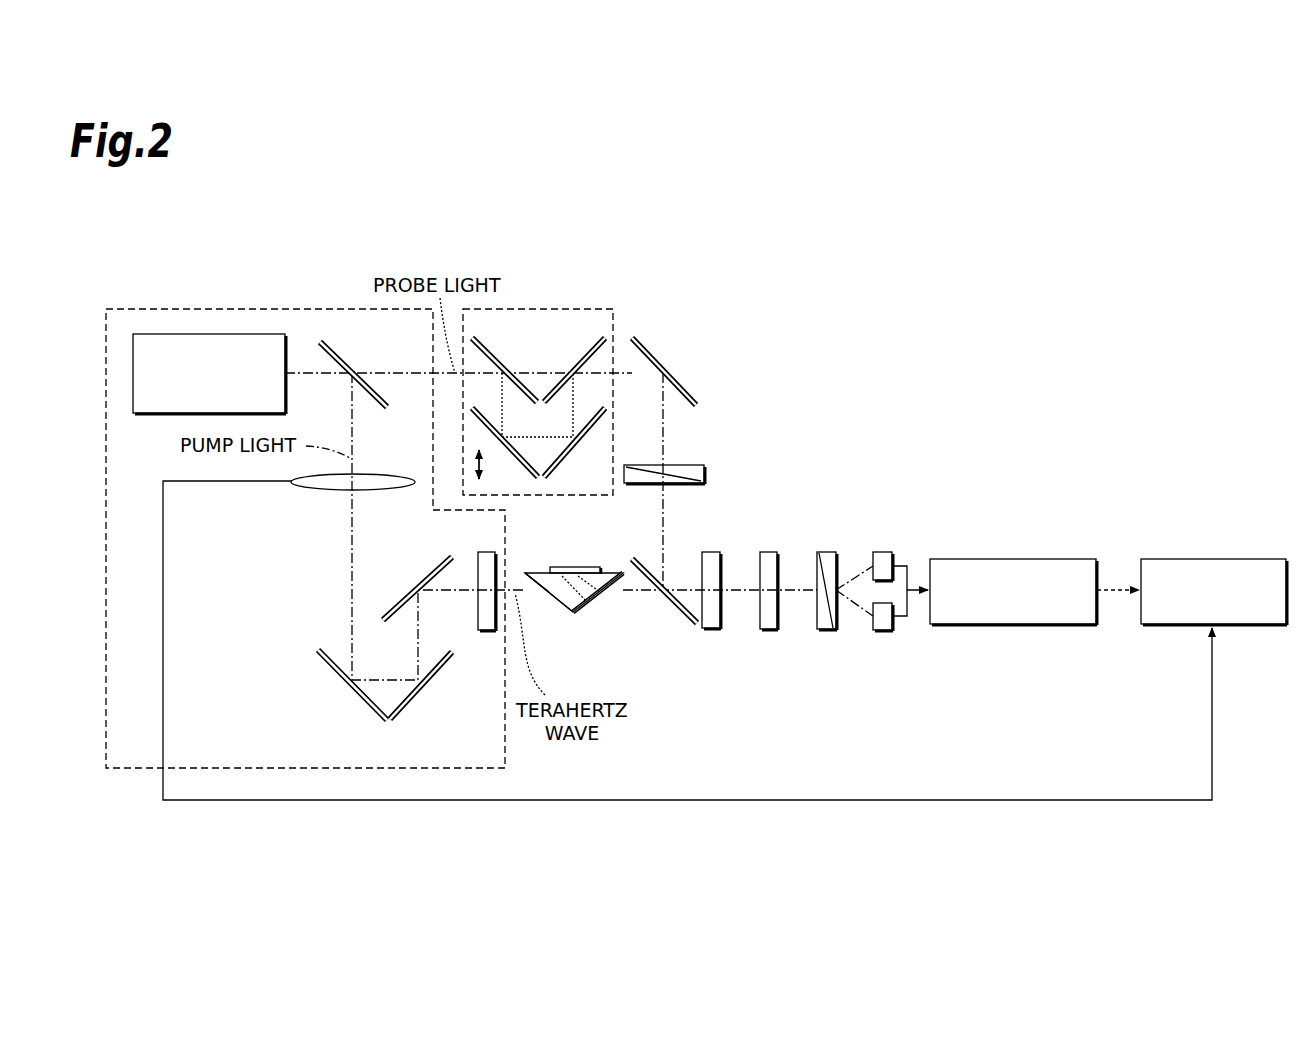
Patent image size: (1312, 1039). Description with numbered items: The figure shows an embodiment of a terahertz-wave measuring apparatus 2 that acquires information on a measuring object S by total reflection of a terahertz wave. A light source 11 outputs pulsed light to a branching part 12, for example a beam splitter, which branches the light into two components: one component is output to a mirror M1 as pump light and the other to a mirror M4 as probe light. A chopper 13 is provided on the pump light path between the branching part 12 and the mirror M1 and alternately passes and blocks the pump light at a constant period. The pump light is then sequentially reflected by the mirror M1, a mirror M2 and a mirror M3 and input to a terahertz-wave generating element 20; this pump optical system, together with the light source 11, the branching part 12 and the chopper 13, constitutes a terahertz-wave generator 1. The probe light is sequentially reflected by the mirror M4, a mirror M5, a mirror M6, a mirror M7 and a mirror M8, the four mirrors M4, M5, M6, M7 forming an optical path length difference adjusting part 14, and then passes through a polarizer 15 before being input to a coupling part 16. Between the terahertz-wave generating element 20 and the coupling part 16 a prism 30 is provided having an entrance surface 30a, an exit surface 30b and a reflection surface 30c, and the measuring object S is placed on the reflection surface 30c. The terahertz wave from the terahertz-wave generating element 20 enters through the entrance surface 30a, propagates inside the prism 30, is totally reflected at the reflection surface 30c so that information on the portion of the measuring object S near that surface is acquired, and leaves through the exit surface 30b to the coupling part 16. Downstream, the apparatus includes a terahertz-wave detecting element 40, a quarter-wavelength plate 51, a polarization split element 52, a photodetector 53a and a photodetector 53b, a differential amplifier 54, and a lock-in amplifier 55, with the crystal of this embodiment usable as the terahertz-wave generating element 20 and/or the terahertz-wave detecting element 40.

The terahertz-wave generator 1 is at (147, 309).
The terahertz-wave measuring apparatus 2 is at (945, 345).
The light source 11 is at (158, 415).
The branching part 12 is at (343, 351).
The chopper 13 is at (318, 491).
The optical path length difference adjusting part 14 is at (566, 309).
The polarizer 15 is at (692, 463).
The coupling part 16 is at (670, 615).
The terahertz-wave generating element 20 is at (476, 612).
The prism 30 is at (586, 612).
The entrance surface 30a is at (559, 600).
The exit surface 30b is at (598, 598).
The reflection surface 30c is at (547, 580).
The terahertz-wave detecting element 40 is at (712, 552).
The quarter-wavelength plate 51 is at (770, 632).
The polarization split element 52 is at (827, 632).
The photodetector 53a is at (884, 552).
The photodetector 53b is at (880, 632).
The differential amplifier 54 is at (969, 625).
The lock-in amplifier 55 is at (1258, 626).
The mirror M1 is at (358, 697).
The mirror M2 is at (415, 700).
The mirror M3 is at (416, 588).
The mirror M4 is at (488, 350).
The mirror M5 is at (513, 453).
The mirror M6 is at (575, 453).
The mirror M7 is at (576, 368).
The mirror M8 is at (660, 355).
The measuring object S is at (585, 567).